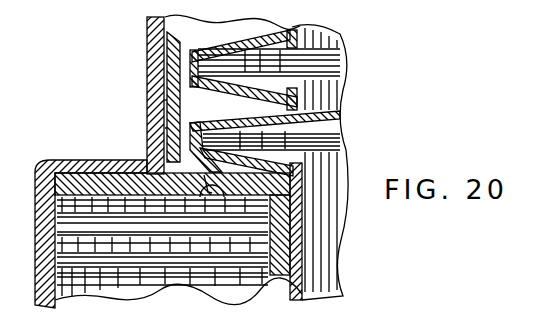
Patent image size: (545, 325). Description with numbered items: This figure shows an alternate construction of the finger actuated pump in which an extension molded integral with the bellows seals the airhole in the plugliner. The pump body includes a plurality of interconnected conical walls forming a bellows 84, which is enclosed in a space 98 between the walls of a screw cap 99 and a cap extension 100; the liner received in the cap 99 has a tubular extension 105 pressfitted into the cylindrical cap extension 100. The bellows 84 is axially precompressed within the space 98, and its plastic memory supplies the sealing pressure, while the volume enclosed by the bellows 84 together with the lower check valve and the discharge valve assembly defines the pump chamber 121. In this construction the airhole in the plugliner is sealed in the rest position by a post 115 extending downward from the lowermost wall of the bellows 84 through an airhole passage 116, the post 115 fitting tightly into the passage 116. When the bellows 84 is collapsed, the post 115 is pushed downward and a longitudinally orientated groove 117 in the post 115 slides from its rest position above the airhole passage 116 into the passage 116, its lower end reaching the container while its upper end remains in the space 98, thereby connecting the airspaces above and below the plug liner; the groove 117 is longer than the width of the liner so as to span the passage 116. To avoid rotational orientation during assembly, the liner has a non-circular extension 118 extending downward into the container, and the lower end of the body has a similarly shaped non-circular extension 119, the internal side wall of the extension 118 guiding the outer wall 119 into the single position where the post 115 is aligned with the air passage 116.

The bellows 84 is at (262, 2).
The space 98 is at (172, 127).
The screw cap 99 is at (46, 162).
The cap extension 100 is at (156, 65).
The tubular extension 105 is at (195, 100).
The post 115 is at (223, 197).
The airhole passage 116 is at (200, 197).
The groove 117 is at (205, 181).
The non-circular extension 118 is at (289, 250).
The non-circular extension 119 is at (313, 241).
The pump chamber 121 is at (323, 158).